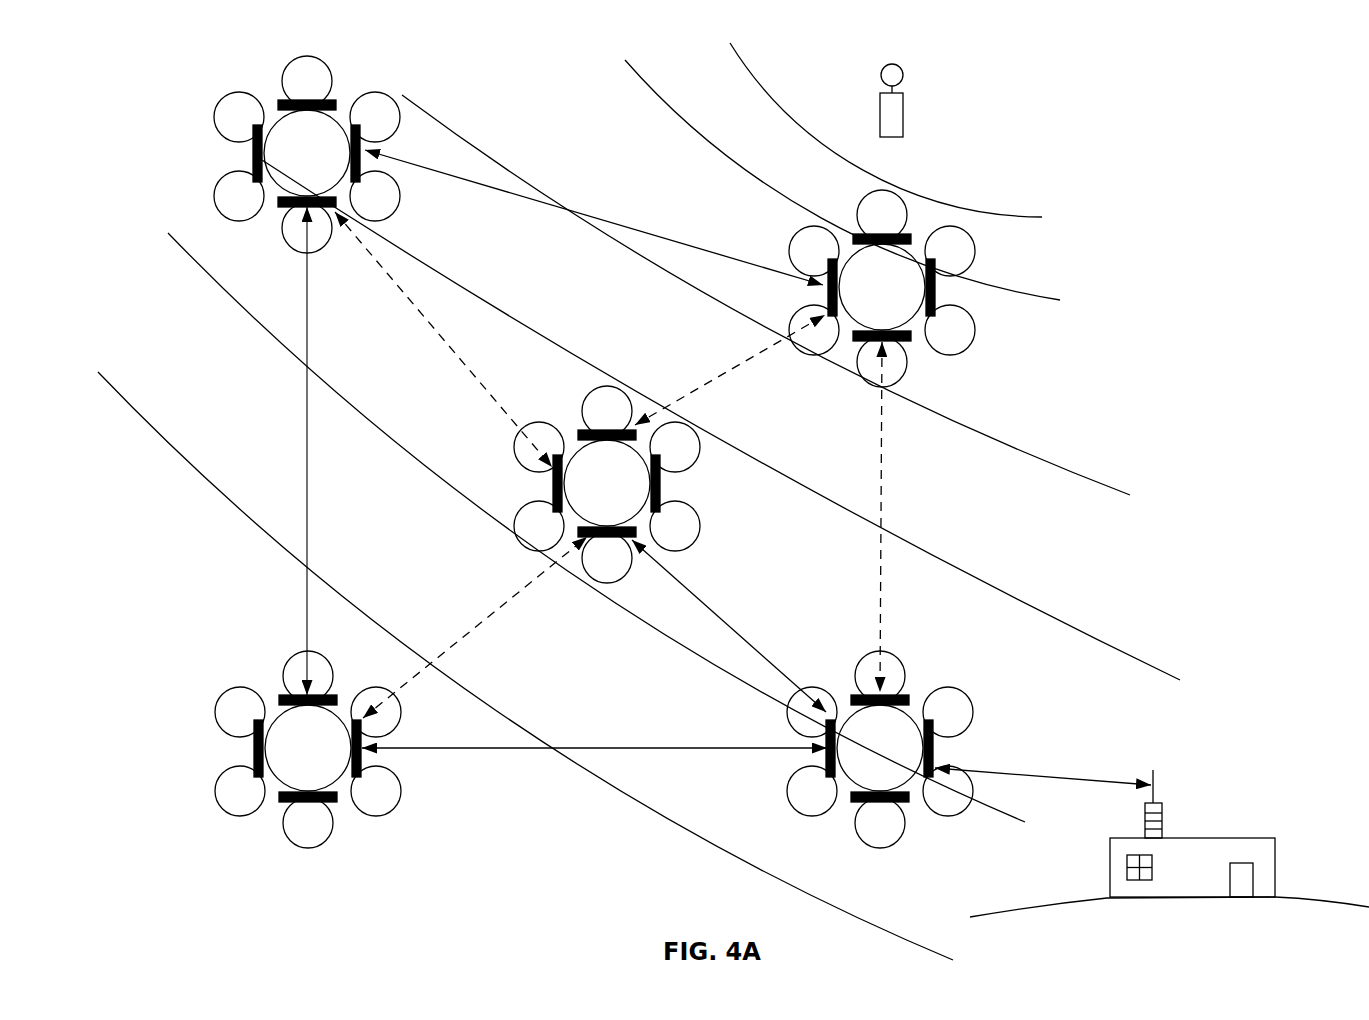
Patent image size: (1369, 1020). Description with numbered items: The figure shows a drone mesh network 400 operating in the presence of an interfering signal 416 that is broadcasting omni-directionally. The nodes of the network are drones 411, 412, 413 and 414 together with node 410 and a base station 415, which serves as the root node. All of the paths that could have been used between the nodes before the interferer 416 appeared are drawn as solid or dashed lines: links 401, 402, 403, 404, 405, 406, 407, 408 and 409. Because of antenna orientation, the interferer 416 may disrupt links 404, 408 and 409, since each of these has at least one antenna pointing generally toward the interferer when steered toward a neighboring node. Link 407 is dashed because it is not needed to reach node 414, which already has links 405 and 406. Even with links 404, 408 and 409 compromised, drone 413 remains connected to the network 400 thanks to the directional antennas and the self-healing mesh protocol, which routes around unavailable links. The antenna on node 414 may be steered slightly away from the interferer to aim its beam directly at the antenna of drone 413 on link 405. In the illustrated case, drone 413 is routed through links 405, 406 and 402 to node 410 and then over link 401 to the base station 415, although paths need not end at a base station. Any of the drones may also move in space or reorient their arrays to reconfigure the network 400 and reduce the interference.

The mesh network 400 is at (186, 111).
The link 401 is at (1043, 765).
The link 402 is at (594, 734).
The link 403 is at (729, 626).
The link 404 is at (906, 517).
The link 405 is at (594, 217).
The link 406 is at (287, 451).
The link 407 is at (443, 339).
The link 408 is at (475, 627).
The link 409 is at (730, 370).
The drone or node 410 is at (880, 749).
The drone 411 is at (607, 484).
The drone 412 is at (308, 749).
The drone 413 is at (882, 288).
The node 414 is at (307, 154).
The base station 415 is at (1192, 833).
The interfering signal 416 is at (917, 111).